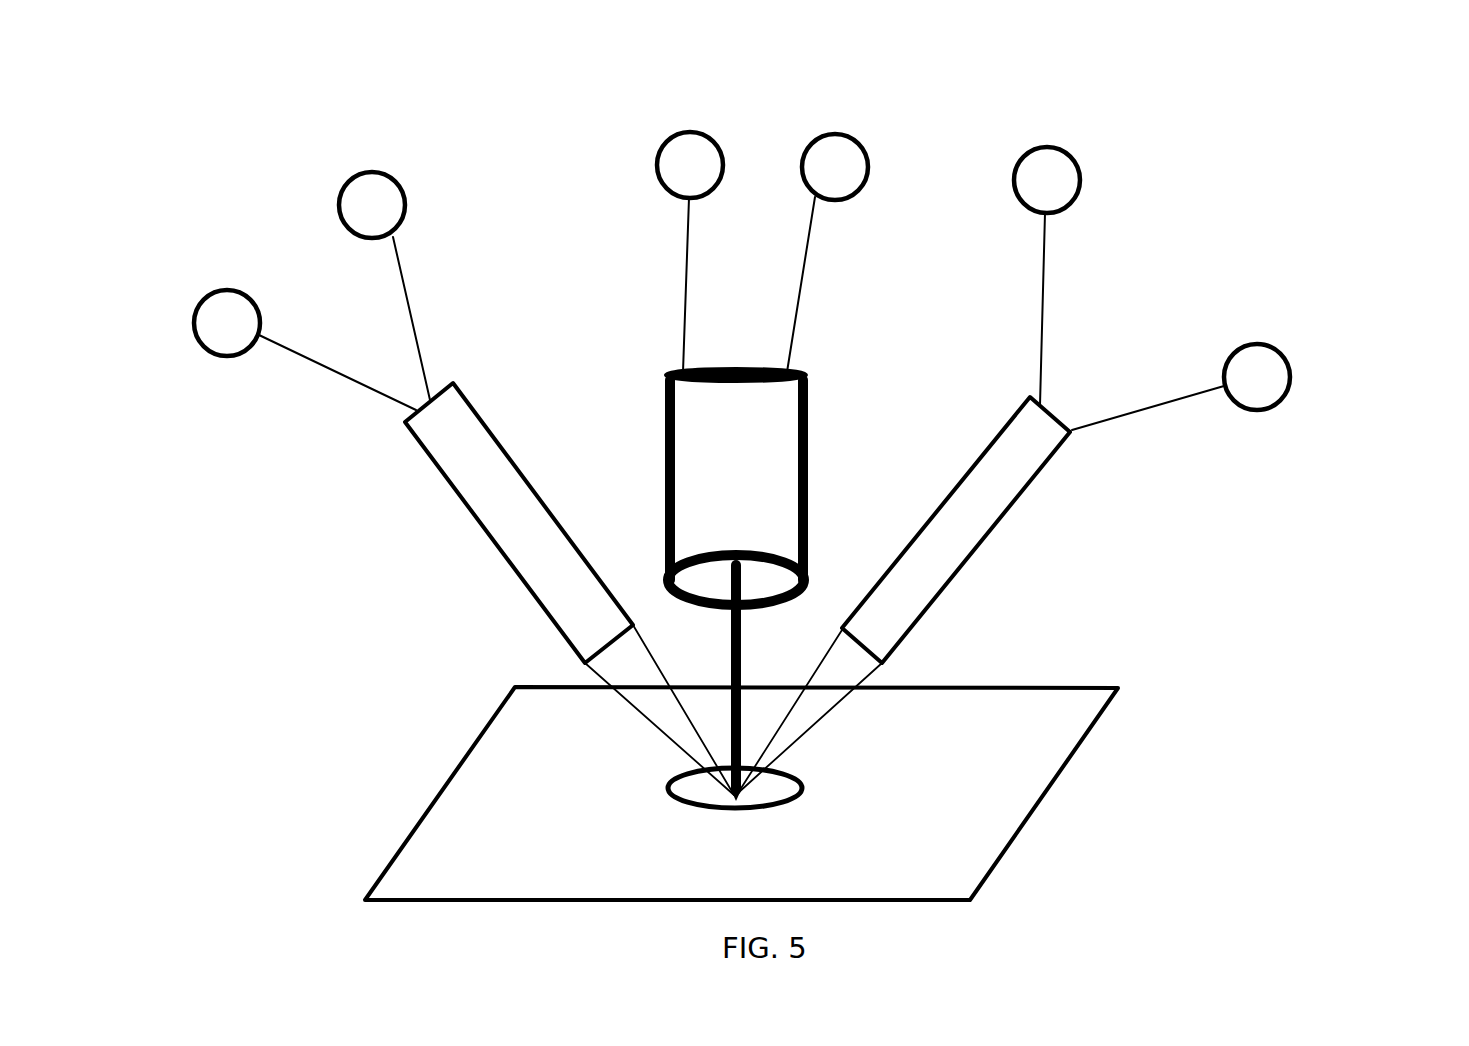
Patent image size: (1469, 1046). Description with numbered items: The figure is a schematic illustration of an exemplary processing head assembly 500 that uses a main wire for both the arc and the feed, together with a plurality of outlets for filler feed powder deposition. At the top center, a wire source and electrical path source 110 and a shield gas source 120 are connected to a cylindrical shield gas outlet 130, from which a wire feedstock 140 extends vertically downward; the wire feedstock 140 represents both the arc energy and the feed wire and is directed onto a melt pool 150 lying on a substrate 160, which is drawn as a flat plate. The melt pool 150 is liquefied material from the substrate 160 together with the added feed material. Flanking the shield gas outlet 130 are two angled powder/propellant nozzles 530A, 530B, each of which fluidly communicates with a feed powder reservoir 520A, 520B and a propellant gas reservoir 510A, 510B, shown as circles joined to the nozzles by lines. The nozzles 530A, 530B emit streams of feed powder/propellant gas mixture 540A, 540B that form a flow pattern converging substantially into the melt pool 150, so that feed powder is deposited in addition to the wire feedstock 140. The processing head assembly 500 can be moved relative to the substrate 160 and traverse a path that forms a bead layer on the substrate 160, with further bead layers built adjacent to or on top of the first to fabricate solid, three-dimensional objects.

The processing head assembly 500 is at (1070, 138).
The wire source and electrical path source 110 is at (670, 176).
The shield gas source 120 is at (868, 170).
The shield gas outlet 130 is at (708, 587).
The wire feedstock 140 is at (742, 662).
The melt pool 150 is at (755, 787).
The substrate 160 is at (1008, 843).
The propellant gas reservoir 510A is at (1075, 197).
The propellant gas reservoir 510B is at (212, 350).
The feed powder reservoir 520A is at (1283, 387).
The feed powder reservoir 520B is at (398, 192).
The powder/propellant nozzle 530A is at (1008, 522).
The powder/propellant nozzle 530B is at (515, 568).
The feed powder/propellant gas mixture 540A is at (833, 705).
The feed powder/propellant gas mixture 540B is at (628, 700).